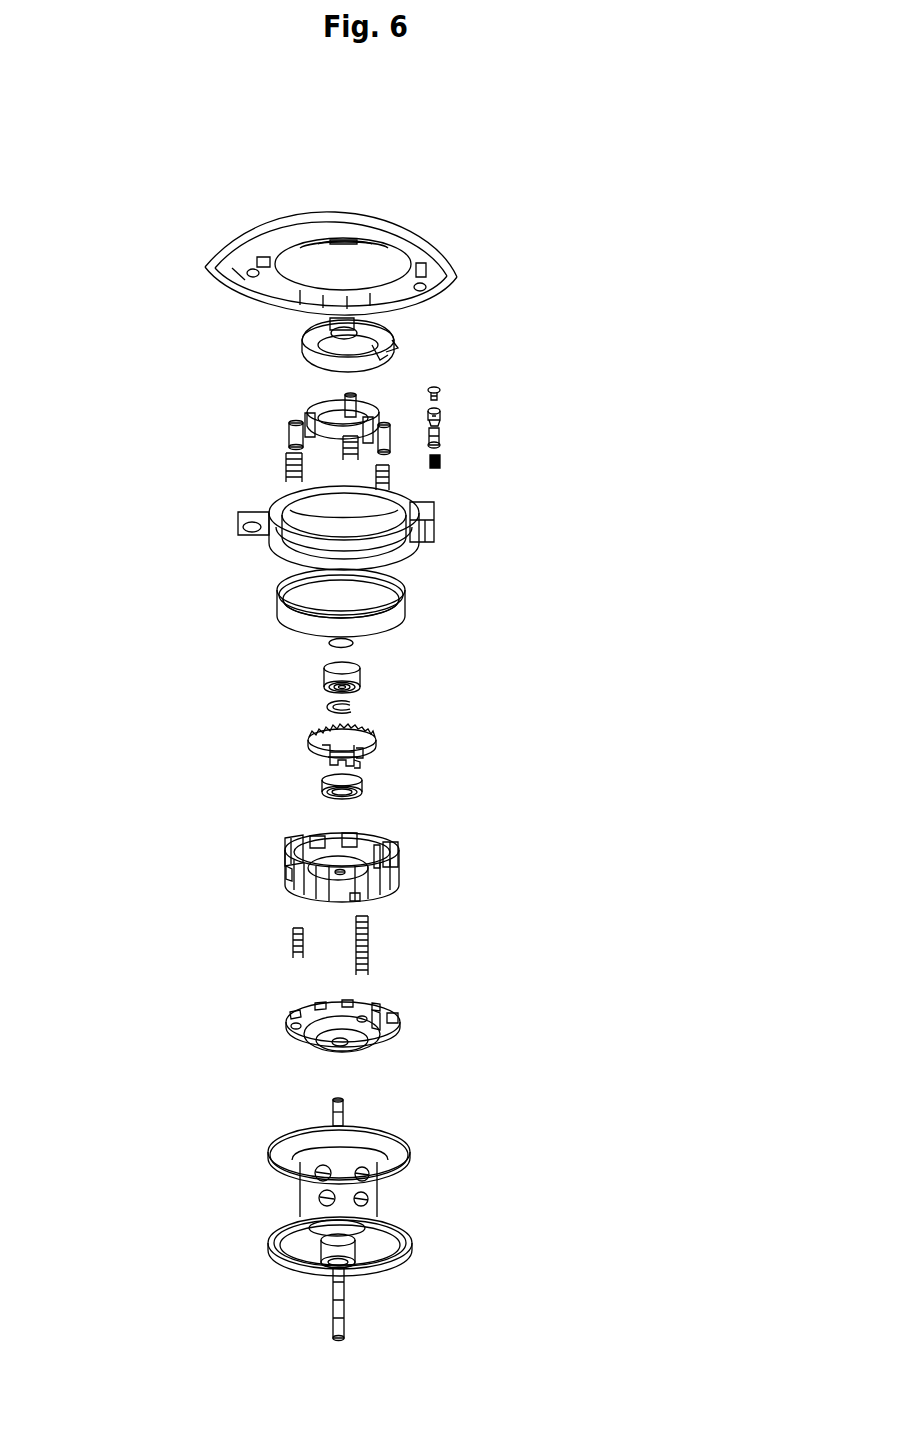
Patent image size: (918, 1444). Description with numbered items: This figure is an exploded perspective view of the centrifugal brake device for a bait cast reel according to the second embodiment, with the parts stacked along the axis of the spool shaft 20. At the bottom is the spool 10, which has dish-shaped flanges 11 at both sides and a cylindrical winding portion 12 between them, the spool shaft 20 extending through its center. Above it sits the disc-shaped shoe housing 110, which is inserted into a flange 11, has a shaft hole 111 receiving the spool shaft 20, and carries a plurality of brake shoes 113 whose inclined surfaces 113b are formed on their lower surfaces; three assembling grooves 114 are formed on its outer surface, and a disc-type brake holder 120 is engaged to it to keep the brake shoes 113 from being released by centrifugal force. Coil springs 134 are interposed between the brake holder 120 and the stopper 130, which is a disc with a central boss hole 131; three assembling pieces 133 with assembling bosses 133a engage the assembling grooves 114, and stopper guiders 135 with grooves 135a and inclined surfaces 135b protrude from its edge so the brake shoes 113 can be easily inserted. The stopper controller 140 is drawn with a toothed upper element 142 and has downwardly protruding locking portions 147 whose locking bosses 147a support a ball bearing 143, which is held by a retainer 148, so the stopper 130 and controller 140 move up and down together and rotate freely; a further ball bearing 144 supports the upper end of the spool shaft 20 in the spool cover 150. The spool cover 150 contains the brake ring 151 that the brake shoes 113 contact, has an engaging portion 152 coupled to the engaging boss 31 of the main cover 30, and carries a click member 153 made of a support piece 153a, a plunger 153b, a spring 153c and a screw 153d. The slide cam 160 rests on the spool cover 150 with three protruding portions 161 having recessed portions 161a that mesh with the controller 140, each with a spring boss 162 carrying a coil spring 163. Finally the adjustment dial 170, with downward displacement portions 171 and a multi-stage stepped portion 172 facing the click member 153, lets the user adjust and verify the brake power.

The spool 10 is at (347, 1219).
The flanges 11 is at (287, 1165).
The winding portion 12 is at (307, 1198).
The spool shaft 20 is at (333, 1102).
The main cover 30 is at (395, 230).
The engaging boss 31 is at (252, 267).
The shoe housing 110 is at (333, 1028).
The shaft hole 111 is at (340, 1043).
The brake shoes 113 is at (395, 1025).
The inclined surface 113b is at (390, 1030).
The assembling grooves 114 is at (380, 1013).
The brake holder 120 is at (308, 1012).
The stopper 130 is at (333, 888).
The boss hole 131 is at (338, 873).
The assembling pieces 133 is at (378, 853).
The assembling boss 133a is at (355, 901).
The coil springs 134 is at (367, 930).
The stopper guiders 135 is at (345, 830).
The grooves 135a is at (316, 838).
The inclined surface 135b is at (290, 875).
The stopper controller 140 is at (314, 732).
The ratchet gear 142 is at (320, 734).
The ball bearing 143 is at (320, 797).
The ball bearing 144 is at (322, 673).
The locking portions 147 is at (366, 742).
The locking boss 147a is at (362, 765).
The retainer 148 is at (355, 704).
The spool cover 150 is at (349, 528).
The brake ring 151 is at (284, 597).
The engaging portion 152 is at (248, 518).
The click member 153 is at (528, 432).
The support piece 153a is at (440, 412).
The plunger 153b is at (440, 435).
The spring 153c is at (501, 470).
The screw 153d is at (440, 390).
The slide cam 160 is at (268, 437).
The protruding portions 161 is at (344, 409).
The recessed portion 161a is at (383, 457).
The spring boss 162 is at (288, 435).
The coil spring 163 is at (287, 468).
The adjustment dial 170 is at (403, 348).
The displacement portions 171 is at (308, 332).
The stepped portion 172 is at (400, 332).